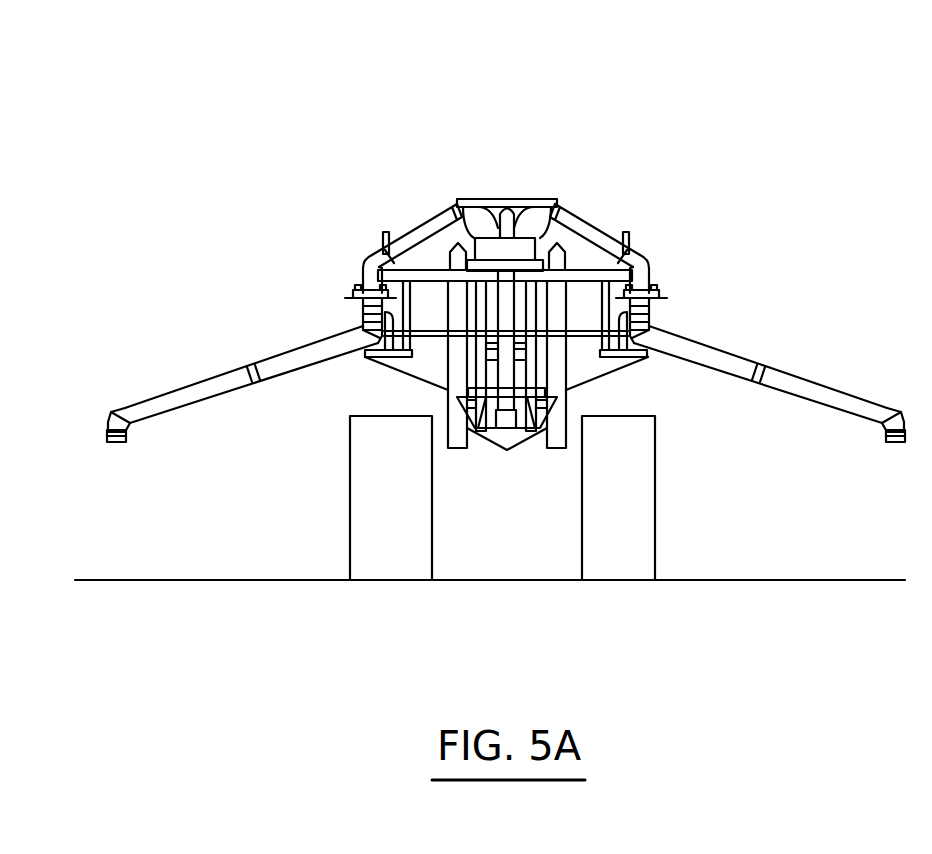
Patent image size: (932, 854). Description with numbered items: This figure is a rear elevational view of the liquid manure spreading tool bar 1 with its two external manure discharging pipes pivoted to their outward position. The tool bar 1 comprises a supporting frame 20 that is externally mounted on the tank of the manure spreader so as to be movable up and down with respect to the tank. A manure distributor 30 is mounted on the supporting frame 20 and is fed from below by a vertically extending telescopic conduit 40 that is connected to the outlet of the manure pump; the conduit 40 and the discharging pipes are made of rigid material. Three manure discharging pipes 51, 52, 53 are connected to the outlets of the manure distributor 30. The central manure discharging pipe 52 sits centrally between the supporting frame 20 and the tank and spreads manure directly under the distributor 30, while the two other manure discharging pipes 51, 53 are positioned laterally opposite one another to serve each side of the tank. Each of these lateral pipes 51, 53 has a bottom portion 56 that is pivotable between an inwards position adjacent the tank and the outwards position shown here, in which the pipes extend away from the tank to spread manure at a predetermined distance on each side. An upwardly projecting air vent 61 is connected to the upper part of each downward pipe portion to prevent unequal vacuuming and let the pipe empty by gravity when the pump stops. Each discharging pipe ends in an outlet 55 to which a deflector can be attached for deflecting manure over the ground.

The liquid manure spreading tool bar 1 is at (312, 124).
The supporting frame 20 is at (600, 270).
The manure distributor 30 is at (518, 245).
The vertically extending telescopic conduit 40 is at (510, 308).
The manure discharging pipe 51 is at (402, 228).
The central manure discharging pipe 52 is at (508, 205).
The manure discharging pipe 53 is at (613, 232).
The outlet 55 is at (116, 444).
The bottom portion 56 is at (221, 382).
The air vent 61 is at (381, 236).